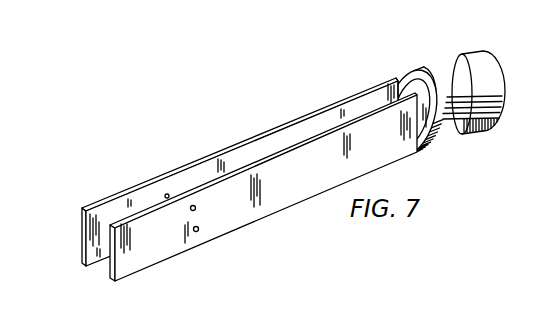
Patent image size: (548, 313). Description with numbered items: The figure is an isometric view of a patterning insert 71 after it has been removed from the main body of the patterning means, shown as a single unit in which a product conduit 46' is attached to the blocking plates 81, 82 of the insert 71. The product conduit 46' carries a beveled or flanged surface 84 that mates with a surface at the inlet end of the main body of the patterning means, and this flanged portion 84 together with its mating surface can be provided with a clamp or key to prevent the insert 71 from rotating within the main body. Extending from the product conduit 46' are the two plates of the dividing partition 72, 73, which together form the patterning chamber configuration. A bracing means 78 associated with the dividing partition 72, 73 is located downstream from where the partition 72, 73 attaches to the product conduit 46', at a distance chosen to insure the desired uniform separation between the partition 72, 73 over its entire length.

The patterning insert 71 is at (300, 106).
The dividing partition 72 is at (143, 183).
The dividing partition 73 is at (281, 207).
The bracing means 78 is at (199, 228).
The blocking plate 81 is at (394, 84).
The blocking plate 82 is at (424, 150).
The beveled or flanged surface 84 is at (404, 79).
The product conduit 46' is at (474, 81).